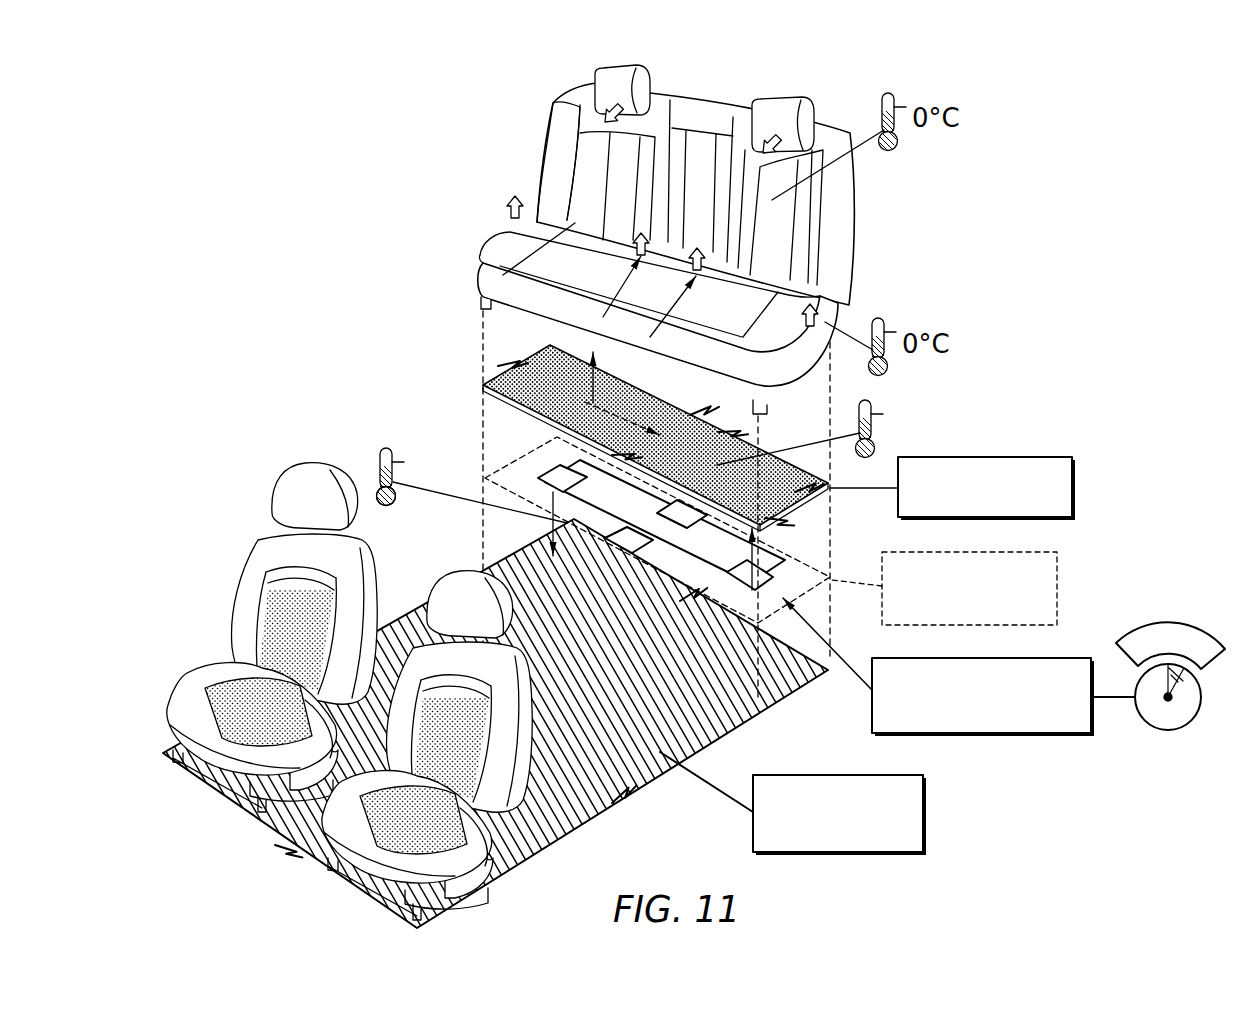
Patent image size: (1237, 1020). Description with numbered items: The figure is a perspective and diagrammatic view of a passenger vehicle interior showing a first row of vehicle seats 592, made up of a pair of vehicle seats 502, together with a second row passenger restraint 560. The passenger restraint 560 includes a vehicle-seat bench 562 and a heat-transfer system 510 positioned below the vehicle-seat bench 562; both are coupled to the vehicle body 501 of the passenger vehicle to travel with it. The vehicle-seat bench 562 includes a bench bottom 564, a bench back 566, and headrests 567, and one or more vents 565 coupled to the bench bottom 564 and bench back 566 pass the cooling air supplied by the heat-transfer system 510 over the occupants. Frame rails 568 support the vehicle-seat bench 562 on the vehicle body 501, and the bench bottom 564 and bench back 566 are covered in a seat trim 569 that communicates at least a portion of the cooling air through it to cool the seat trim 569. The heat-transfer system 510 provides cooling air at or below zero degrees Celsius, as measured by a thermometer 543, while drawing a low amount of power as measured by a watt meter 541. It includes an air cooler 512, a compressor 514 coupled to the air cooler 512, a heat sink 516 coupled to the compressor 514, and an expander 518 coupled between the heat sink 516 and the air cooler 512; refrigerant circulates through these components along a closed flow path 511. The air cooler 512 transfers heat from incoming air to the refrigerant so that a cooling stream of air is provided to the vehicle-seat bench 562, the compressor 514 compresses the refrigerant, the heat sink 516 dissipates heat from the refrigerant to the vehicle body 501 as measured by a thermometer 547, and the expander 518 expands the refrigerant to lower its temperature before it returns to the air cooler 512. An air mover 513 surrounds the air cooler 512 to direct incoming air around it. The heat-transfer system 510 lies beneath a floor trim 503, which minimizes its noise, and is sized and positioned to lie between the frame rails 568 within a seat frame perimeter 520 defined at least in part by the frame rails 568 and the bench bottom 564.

The vehicle body 501 is at (860, 775).
The vehicle seats 502 is at (288, 458).
The floor trim 503 is at (1012, 457).
The heat-transfer system 510 is at (1030, 658).
The flow path 511 is at (671, 573).
The air cooler 512 is at (728, 583).
The air mover 513 is at (744, 600).
The compressor 514 is at (618, 555).
The heat sink 516 is at (541, 462).
The expander 518 is at (638, 507).
The seat frame perimeter 520 is at (1000, 552).
The watt meter 541 is at (1155, 625).
The thermometer 543 is at (872, 404).
The thermometer 547 is at (384, 449).
The second row passenger restraint 560 is at (989, 292).
The vehicle-seat bench 562 is at (861, 220).
The bench bottom 564 is at (743, 327).
The vents 565 is at (595, 86).
The bench back 566 is at (816, 262).
The headrests 567 is at (794, 111).
The frame rails 568 is at (477, 291).
The seat trim 569 is at (557, 261).
The first row of vehicle seats 592 is at (373, 455).